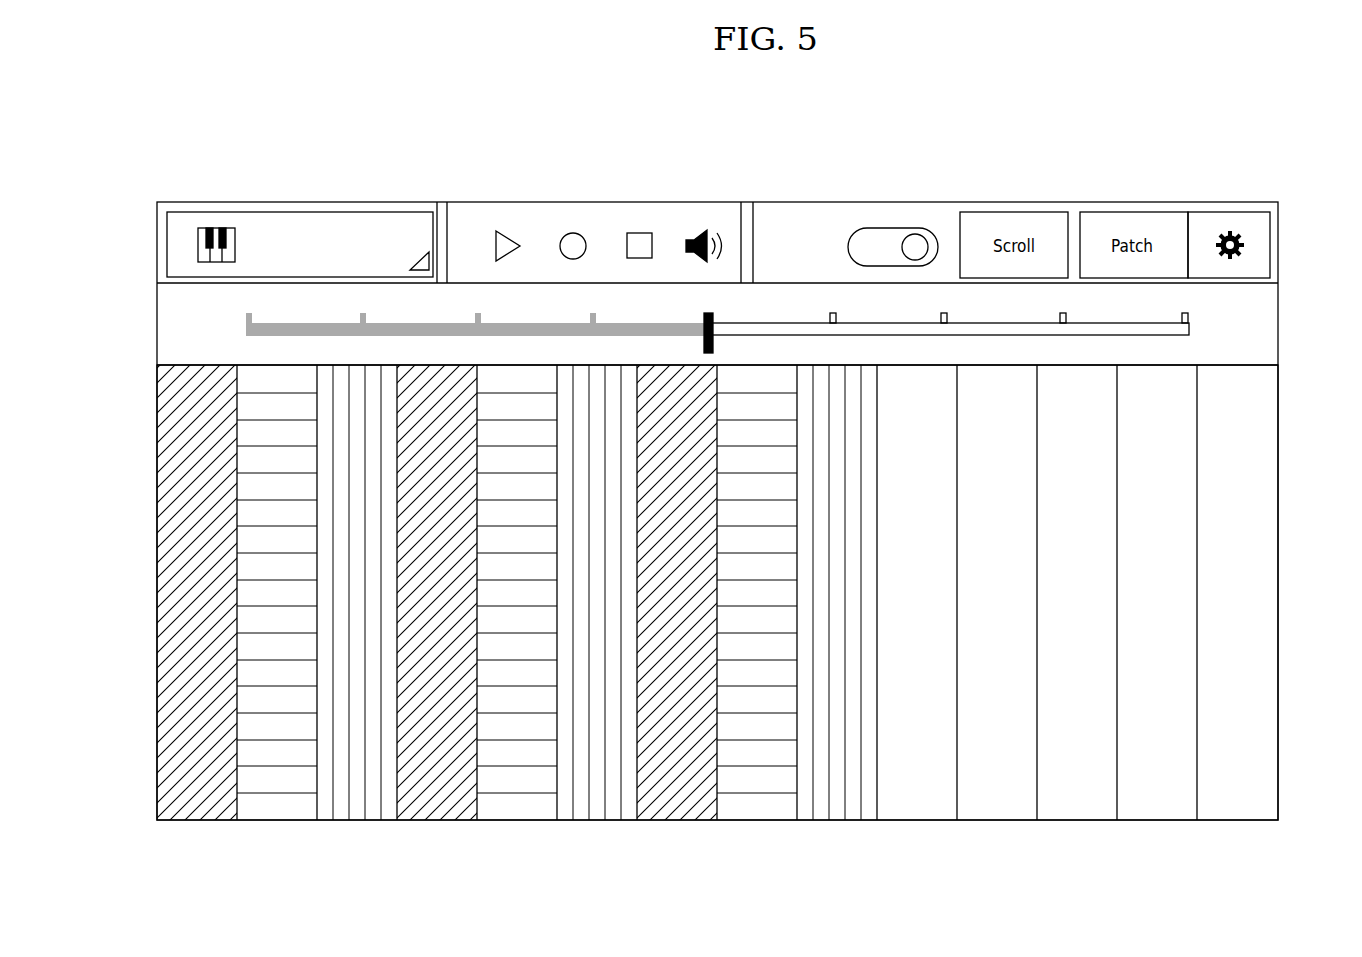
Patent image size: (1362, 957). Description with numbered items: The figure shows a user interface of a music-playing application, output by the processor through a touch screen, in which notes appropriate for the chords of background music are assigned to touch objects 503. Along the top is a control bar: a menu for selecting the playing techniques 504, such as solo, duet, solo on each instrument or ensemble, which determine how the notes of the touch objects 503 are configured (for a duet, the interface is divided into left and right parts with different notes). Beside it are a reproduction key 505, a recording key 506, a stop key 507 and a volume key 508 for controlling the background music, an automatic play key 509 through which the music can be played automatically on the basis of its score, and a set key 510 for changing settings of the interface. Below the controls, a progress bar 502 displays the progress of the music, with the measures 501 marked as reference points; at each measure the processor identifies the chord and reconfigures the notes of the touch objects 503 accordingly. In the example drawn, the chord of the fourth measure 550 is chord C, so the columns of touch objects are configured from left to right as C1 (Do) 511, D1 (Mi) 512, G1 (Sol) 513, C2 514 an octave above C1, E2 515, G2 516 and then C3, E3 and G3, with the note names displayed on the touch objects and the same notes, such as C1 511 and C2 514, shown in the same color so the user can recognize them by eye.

The measures 501 is at (1190, 296).
The progress bar 502 is at (1190, 320).
The touch objects 503 is at (748, 615).
The techniques 504 is at (249, 212).
The reproduction key 505 is at (508, 230).
The recording key 506 is at (574, 232).
The stop key 507 is at (640, 232).
The volume key 508 is at (707, 230).
The automatic play key 509 is at (887, 228).
The set key 510 is at (1231, 212).
The fourth measure 550 is at (714, 322).
The C1 (Do) 511 is at (198, 822).
The D1 (Mi) 512 is at (274, 822).
The G1 (Sol) 513 is at (350, 822).
The C2 514 is at (428, 822).
The E2 515 is at (522, 822).
The G2 516 is at (600, 822).